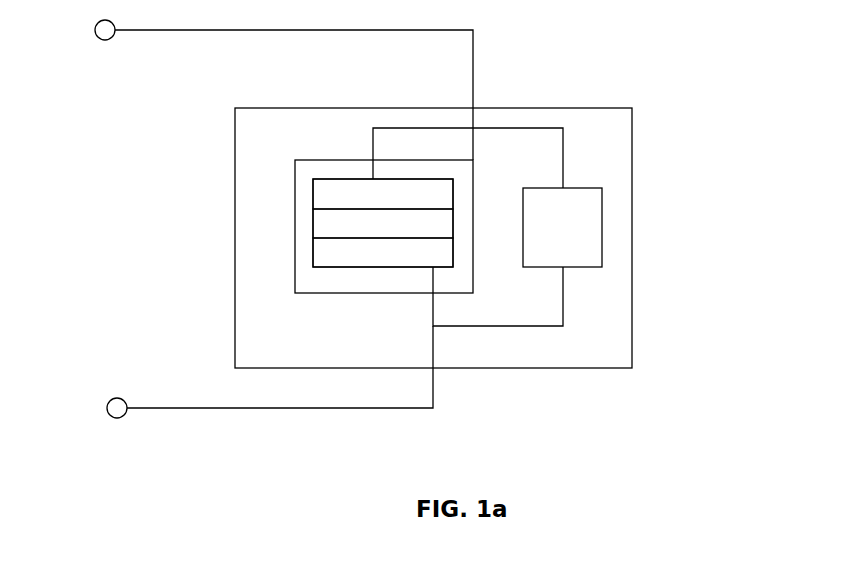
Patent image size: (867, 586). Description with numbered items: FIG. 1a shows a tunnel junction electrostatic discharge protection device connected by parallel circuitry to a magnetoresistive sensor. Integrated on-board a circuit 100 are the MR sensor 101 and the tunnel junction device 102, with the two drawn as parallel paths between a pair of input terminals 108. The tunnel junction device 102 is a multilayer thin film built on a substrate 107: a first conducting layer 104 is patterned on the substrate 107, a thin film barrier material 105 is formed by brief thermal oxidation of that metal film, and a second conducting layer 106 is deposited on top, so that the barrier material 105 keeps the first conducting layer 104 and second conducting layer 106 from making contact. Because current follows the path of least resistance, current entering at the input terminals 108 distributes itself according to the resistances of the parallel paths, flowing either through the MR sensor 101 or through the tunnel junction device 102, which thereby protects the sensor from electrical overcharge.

The circuit 100 is at (634, 106).
The MR sensor 101 is at (603, 203).
The tunnel junction device 102 is at (294, 232).
The first conducting layer 104 is at (383, 252).
The thin film barrier material 105 is at (383, 223).
The second conducting layer 106 is at (383, 194).
The substrate 107 is at (316, 174).
The input terminals 108 is at (105, 42).